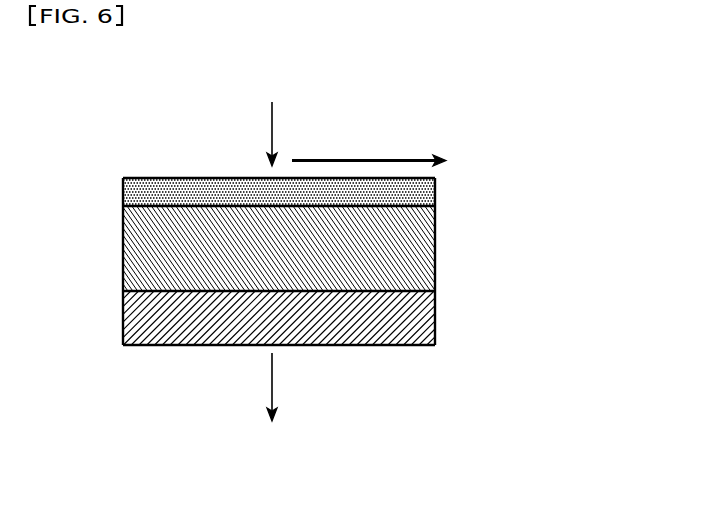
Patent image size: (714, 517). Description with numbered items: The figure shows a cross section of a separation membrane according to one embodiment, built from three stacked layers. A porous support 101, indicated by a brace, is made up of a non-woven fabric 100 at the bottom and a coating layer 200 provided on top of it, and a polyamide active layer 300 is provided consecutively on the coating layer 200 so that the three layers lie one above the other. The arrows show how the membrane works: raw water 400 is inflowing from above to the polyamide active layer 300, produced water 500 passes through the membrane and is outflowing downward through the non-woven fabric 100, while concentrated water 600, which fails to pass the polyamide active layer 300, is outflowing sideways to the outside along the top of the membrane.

The non-woven fabric 100 is at (437, 323).
The coating layer 200 is at (437, 263).
The polyamide active layer 300 is at (437, 188).
The porous support 101 is at (517, 218).
The raw water 400 is at (271, 118).
The produced water 500 is at (273, 404).
The concentrated water 600 is at (369, 144).